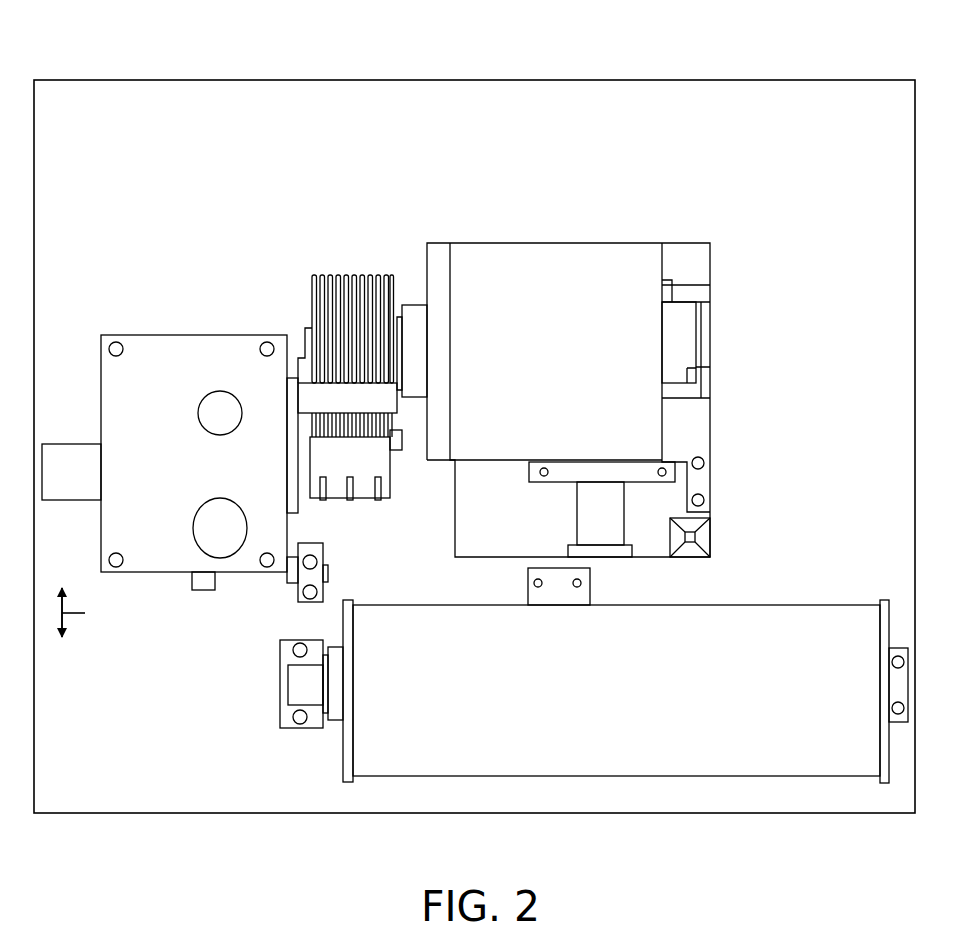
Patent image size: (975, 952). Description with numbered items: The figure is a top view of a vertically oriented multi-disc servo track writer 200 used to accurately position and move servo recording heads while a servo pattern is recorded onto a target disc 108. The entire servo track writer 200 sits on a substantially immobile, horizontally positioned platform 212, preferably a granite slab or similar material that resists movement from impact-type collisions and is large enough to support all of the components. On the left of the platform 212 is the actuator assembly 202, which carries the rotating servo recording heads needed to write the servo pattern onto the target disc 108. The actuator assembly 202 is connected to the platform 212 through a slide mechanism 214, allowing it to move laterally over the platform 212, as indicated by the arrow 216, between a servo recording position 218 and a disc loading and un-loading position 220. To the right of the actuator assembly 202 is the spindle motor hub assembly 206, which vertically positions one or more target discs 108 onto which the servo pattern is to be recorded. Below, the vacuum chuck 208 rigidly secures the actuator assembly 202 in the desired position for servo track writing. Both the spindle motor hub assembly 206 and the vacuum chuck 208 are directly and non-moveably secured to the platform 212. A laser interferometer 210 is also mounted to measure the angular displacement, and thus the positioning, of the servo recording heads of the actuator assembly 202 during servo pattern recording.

The target disc 108 is at (312, 275).
The multi-disc servo track writer 200 is at (170, 214).
The actuator assembly 202 is at (176, 350).
The spindle motor hub assembly 206 is at (604, 252).
The vacuum chuck 208 is at (482, 757).
The laser interferometer 210 is at (288, 603).
The platform 212 is at (502, 97).
The slide mechanism 214 is at (203, 580).
The arrow 216 is at (85, 613).
The servo recording position 218 is at (62, 586).
The disc loading and un-loading position 220 is at (62, 640).